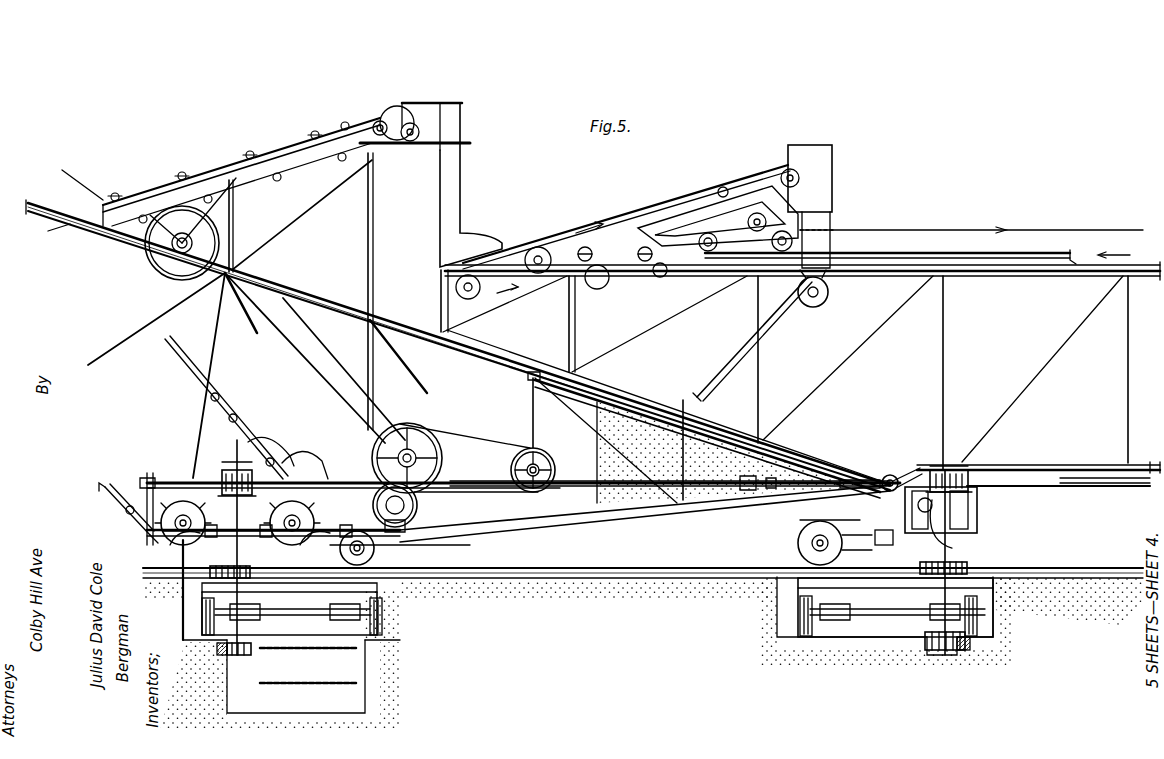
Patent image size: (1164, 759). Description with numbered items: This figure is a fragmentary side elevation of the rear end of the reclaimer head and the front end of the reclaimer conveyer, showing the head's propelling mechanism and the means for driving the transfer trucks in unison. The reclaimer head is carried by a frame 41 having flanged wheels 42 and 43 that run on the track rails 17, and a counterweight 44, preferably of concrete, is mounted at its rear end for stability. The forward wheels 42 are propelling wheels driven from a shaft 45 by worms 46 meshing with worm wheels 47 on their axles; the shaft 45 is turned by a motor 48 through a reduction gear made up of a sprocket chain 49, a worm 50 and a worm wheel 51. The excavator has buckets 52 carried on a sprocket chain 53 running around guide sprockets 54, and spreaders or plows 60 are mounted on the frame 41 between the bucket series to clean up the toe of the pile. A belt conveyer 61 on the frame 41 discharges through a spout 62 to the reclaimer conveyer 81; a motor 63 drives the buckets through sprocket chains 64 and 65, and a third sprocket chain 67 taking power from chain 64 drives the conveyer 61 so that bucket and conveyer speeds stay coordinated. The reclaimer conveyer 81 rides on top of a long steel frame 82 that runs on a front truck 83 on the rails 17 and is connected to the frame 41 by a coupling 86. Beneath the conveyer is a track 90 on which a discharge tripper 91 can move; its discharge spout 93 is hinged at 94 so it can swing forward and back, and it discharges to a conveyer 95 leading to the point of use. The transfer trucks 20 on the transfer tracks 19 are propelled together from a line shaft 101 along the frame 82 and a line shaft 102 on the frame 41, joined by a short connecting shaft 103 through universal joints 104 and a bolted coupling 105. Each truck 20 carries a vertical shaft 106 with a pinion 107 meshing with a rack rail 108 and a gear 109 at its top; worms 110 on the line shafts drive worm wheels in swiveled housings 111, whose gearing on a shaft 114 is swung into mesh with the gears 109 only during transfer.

The track rails 17 is at (645, 567).
The transfer tracks 19 is at (383, 630).
The transfer truck 20 is at (316, 588).
The frame 41 is at (300, 298).
The forward wheels 42 is at (376, 553).
The flanged wheels 43 is at (800, 543).
The counterweight 44 is at (640, 418).
The shaft 45 is at (300, 505).
The worms 46 is at (192, 492).
The worm wheels 47 is at (200, 548).
The motor 48 is at (541, 450).
The sprocket chain 49 is at (464, 480).
The worm 50 is at (390, 500).
The worm wheel 51 is at (441, 547).
The buckets 52 is at (272, 428).
The sprocket chain 53 is at (229, 400).
The guide sprockets 54 is at (190, 518).
The spreaders or plows 60 is at (303, 498).
The belt conveyer 61 is at (220, 166).
The spout 62 is at (461, 190).
The motor 63 is at (430, 441).
The sprocket chain 64 is at (312, 322).
The sprocket chain 65 is at (90, 188).
The third sprocket chain 67 is at (298, 192).
The reclaimer conveyer 81 is at (627, 224).
The frame 82 is at (650, 277).
The front truck 83 is at (979, 513).
The coupling 86 is at (893, 541).
The track 90 is at (880, 250).
The discharge tripper 91 is at (749, 192).
The discharge spout 93 is at (772, 340).
The hinge 94 is at (828, 301).
The conveyer 95 is at (316, 650).
The line shaft 101 is at (1086, 484).
The line shaft 102 is at (575, 481).
The connecting shaft 103 is at (832, 489).
The universal joints 104 is at (760, 488).
The bolted coupling 105 is at (881, 470).
The vertical shaft 106 is at (241, 627).
The pinion 107 is at (248, 652).
The rack rail 108 is at (217, 656).
The gear 109 is at (200, 585).
The worms 110 is at (243, 480).
The housings 111 is at (228, 470).
The shaft 114 is at (986, 540).